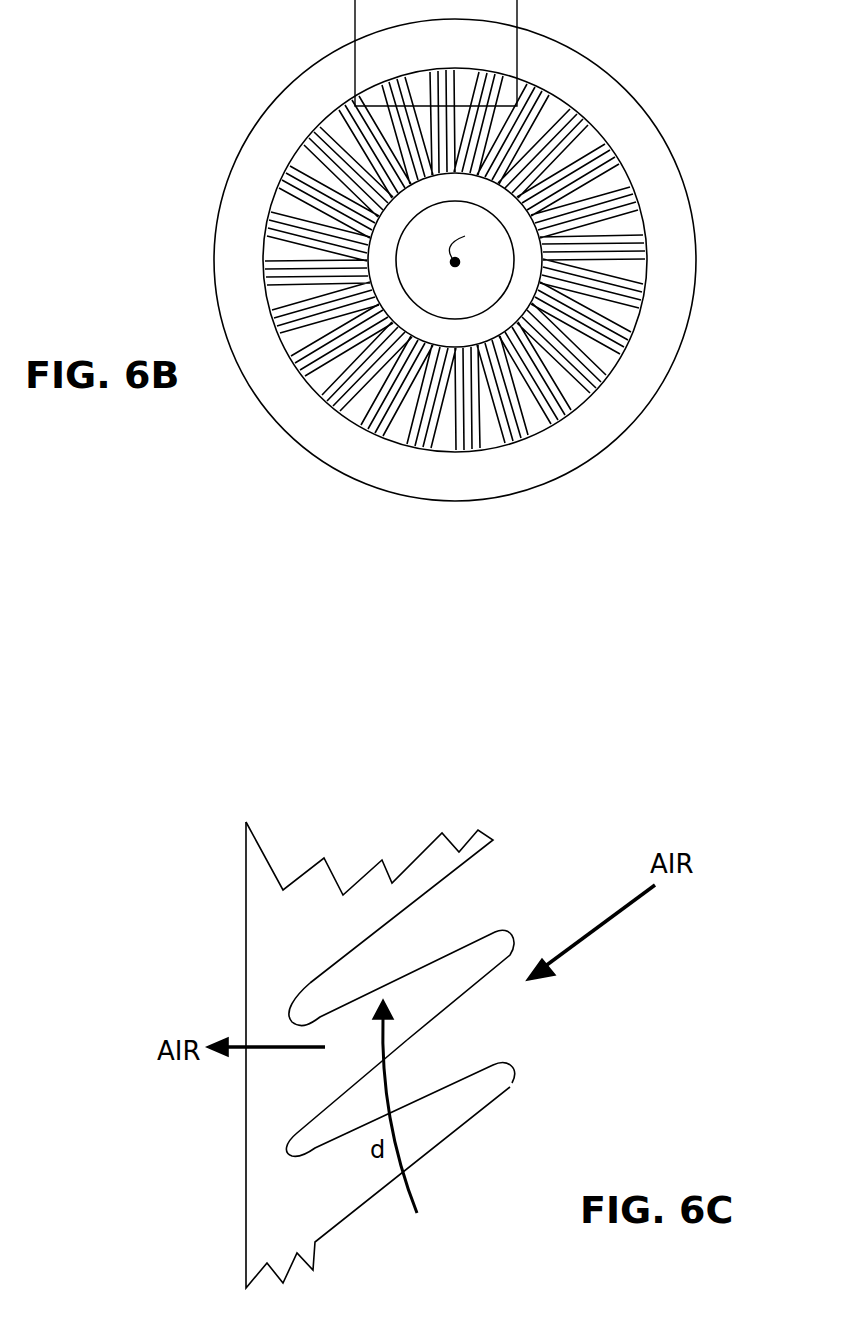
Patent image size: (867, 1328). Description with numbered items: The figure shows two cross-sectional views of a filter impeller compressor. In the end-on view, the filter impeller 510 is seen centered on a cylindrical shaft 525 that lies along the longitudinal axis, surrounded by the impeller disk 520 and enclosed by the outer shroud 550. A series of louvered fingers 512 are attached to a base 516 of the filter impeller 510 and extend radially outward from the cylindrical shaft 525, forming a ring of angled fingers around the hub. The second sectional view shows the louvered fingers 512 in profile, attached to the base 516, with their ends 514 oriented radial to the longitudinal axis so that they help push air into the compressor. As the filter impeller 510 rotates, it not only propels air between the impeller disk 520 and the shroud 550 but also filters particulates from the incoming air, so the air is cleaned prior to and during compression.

In FIG. 6B, the filter impeller 510 is at (490, 440).
In FIG. 6B, the louvered fingers 512 is at (338, 398).
In FIG. 6C, the louvered fingers 512 is at (442, 1118).
In FIG. 6B, the ends 514 is at (623, 333).
In FIG. 6C, the ends 514 is at (505, 1088).
In FIG. 6B, the base 516 is at (302, 162).
In FIG. 6C, the base 516 is at (262, 1230).
In FIG. 6B, the impeller disk 520 is at (517, 222).
In FIG. 6B, the cylindrical shaft 525 is at (500, 268).
In FIG. 6B, the shroud 550 is at (603, 92).